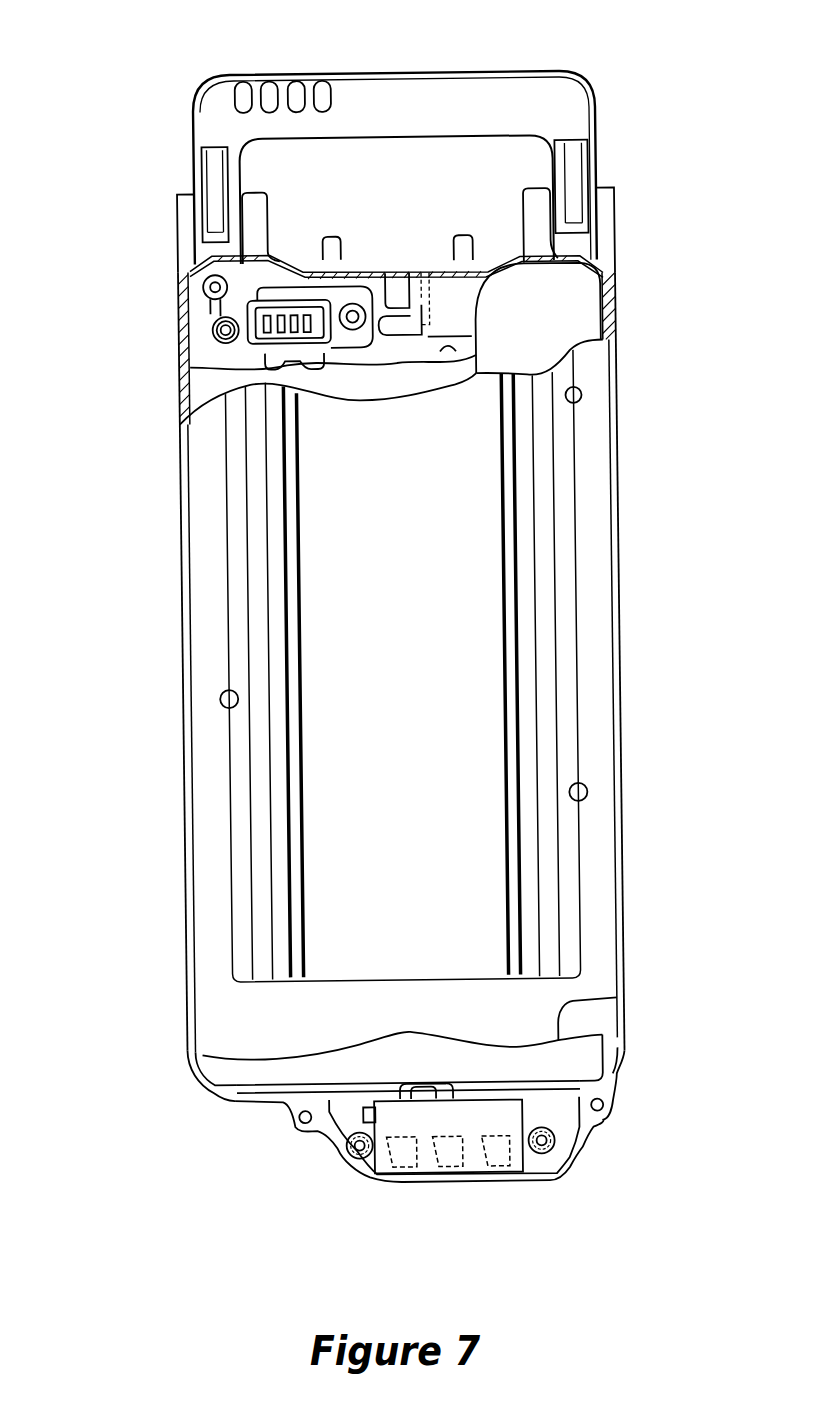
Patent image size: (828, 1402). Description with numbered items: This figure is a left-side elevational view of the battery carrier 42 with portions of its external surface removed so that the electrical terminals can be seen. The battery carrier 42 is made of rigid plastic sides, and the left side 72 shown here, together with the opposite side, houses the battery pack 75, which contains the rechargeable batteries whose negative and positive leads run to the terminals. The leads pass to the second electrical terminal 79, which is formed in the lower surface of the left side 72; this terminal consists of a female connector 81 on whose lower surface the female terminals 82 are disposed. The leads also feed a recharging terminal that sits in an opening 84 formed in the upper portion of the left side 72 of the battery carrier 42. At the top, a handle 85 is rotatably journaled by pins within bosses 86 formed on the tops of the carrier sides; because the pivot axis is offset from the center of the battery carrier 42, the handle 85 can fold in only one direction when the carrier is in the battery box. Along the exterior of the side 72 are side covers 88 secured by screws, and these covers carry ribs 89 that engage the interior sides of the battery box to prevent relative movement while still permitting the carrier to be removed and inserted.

The battery carrier 42 is at (159, 279).
The left side 72 is at (179, 508).
The battery pack 75 is at (206, 395).
The second electrical terminal 79 is at (535, 1207).
The female connector 81 is at (466, 1161).
The female terminals 82 is at (440, 1165).
The opening 84 is at (181, 354).
The handle 85 is at (477, 89).
The bosses 86 is at (180, 209).
The side covers 88 is at (285, 836).
The ribs 89 is at (521, 719).